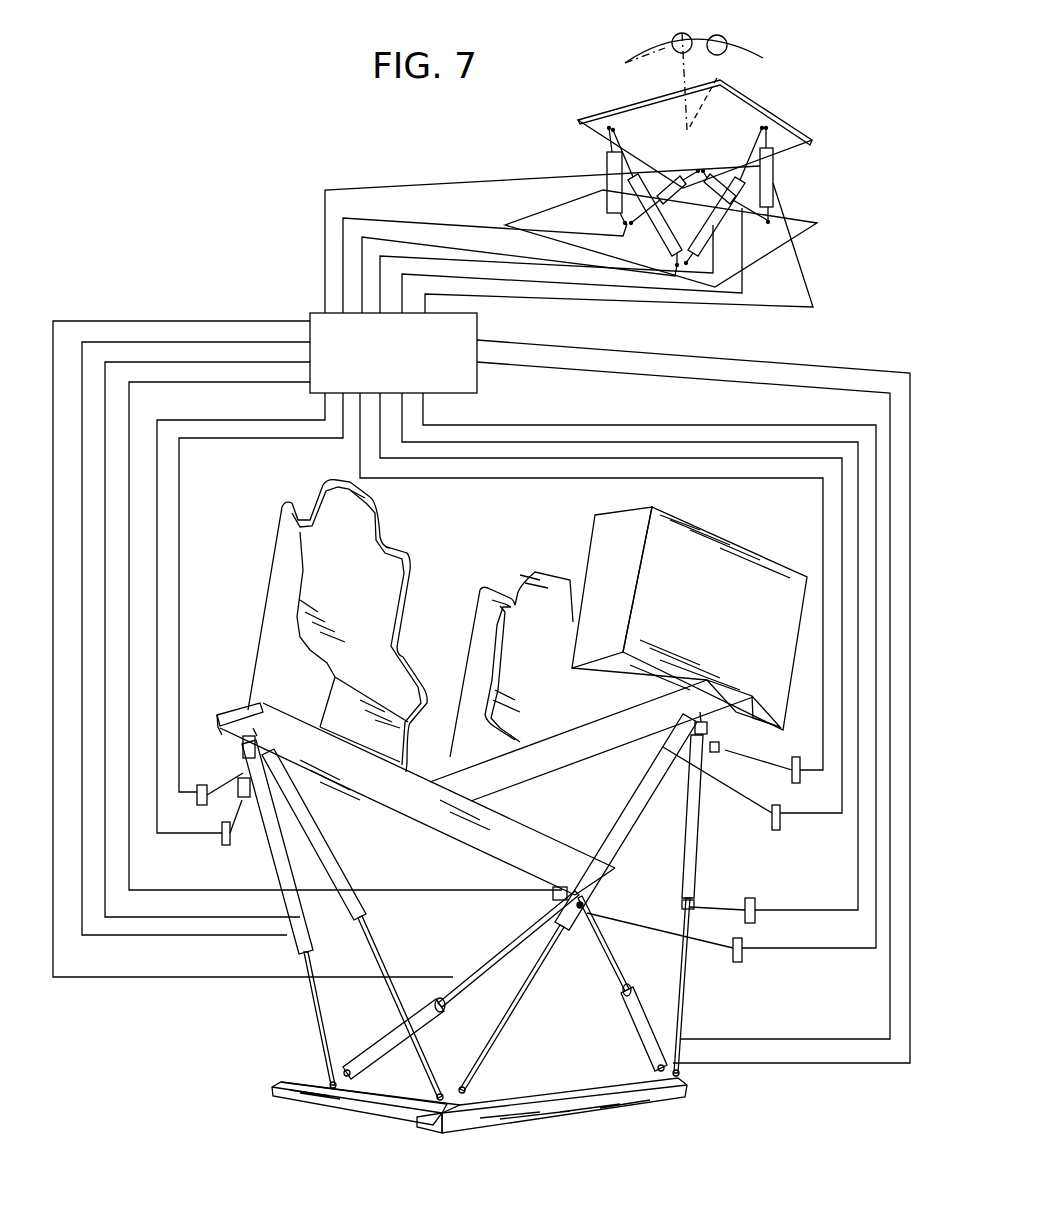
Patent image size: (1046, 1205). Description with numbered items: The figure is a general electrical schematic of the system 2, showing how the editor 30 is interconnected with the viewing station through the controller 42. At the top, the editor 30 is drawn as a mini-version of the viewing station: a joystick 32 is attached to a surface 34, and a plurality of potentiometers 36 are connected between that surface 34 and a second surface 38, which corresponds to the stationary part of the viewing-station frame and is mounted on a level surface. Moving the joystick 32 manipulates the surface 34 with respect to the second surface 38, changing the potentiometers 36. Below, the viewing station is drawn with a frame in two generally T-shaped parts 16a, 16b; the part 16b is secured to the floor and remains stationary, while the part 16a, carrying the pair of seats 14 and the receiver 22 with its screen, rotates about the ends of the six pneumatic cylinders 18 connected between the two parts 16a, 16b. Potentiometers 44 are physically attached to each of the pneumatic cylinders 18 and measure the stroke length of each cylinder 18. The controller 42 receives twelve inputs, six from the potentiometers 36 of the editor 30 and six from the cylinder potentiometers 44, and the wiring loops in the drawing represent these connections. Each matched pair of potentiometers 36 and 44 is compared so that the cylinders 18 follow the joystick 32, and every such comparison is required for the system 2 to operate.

The system 2 is at (283, 172).
The seats 14 is at (282, 533).
The frame part 16a is at (462, 825).
The frame part 16b is at (272, 1092).
The pneumatic cylinders 18 is at (272, 860).
The receiver 22 is at (602, 543).
The editor 30 is at (625, 92).
The joystick 32 is at (732, 52).
The surface 34 is at (595, 110).
The potentiometers 36 is at (607, 152).
The second surface 38 is at (548, 227).
The controller 42 is at (307, 311).
The potentiometers 44 is at (243, 750).